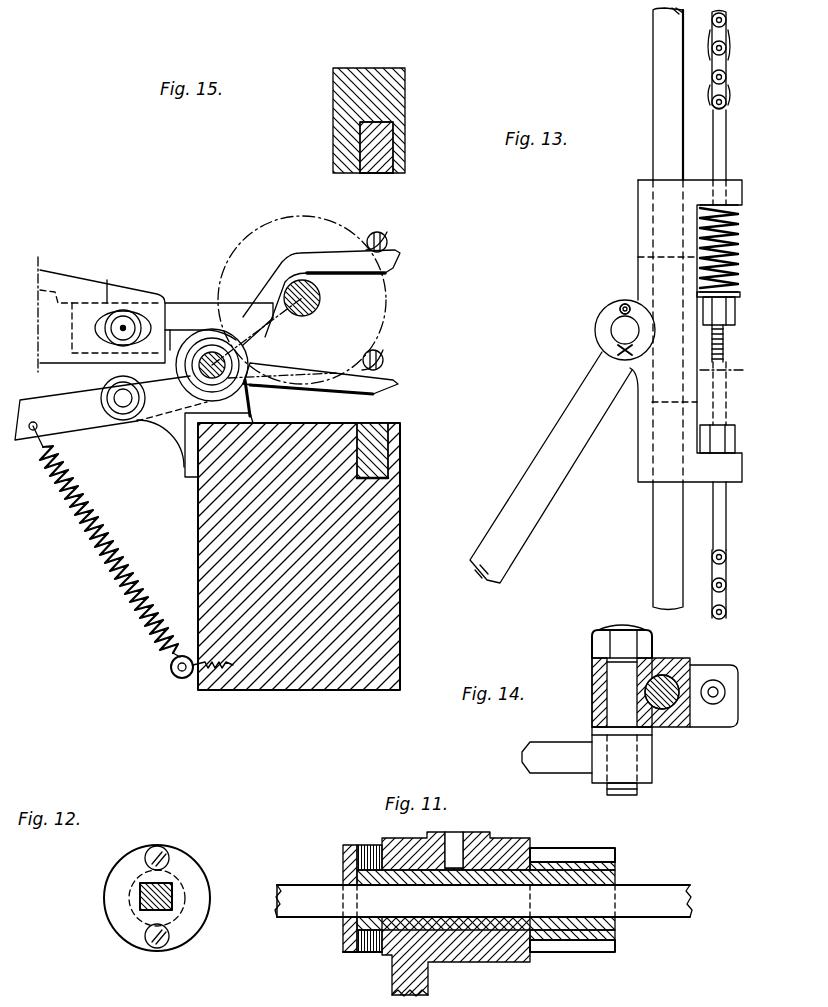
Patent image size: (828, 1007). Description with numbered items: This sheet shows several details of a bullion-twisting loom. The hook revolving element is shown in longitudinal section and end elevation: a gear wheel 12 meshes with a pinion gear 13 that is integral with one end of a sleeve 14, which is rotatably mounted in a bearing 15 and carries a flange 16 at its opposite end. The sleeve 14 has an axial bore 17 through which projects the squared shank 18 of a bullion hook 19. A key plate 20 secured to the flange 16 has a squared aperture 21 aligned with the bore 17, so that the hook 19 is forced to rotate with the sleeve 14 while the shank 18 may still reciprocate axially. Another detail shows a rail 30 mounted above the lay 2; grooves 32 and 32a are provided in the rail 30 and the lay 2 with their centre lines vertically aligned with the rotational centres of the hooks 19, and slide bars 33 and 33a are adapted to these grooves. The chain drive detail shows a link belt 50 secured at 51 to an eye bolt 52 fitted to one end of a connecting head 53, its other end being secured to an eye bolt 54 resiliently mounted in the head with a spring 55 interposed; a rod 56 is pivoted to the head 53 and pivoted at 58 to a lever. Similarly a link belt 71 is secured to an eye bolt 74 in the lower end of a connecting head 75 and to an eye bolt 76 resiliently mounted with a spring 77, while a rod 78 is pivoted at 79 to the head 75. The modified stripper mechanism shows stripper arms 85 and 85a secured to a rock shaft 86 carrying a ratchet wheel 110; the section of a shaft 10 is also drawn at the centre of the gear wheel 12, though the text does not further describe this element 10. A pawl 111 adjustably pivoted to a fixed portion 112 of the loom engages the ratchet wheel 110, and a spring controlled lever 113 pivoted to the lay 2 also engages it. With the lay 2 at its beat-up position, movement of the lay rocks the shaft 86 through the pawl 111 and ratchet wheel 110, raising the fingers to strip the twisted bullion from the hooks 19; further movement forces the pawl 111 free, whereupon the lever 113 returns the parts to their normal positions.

In FIG. 15, the lay 2 is at (370, 538).
In FIG. 15, the drive shaft 10 is at (320, 302).
In FIG. 15, the gear wheel 12 is at (385, 293).
In FIG. 15, the pinion gear 13 is at (388, 242).
In FIG. 11, the pinion gear 13 is at (607, 857).
In FIG. 13, the sleeve 14 is at (625, 330).
In FIG. 12, the sleeve 14 is at (178, 877).
In FIG. 11, the sleeve 14 is at (468, 920).
In FIG. 12, the bearing 15 is at (188, 945).
In FIG. 11, the bearing 15 is at (487, 852).
In FIG. 11, the flange 16 is at (372, 845).
In FIG. 12, the axial bore 17 is at (137, 890).
In FIG. 11, the axial bore 17 is at (552, 872).
In FIG. 12, the squared shank 18 is at (140, 898).
In FIG. 11, the squared shank 18 is at (297, 900).
In FIG. 15, the bullion hook 19 is at (385, 238).
In FIG. 11, the bullion hook 19 is at (648, 902).
In FIG. 12, the key plate 20 is at (130, 922).
In FIG. 11, the key plate 20 is at (345, 955).
In FIG. 12, the squared aperture 21 is at (172, 896).
In FIG. 11, the squared aperture 21 is at (343, 882).
In FIG. 15, the rail 30 is at (393, 98).
In FIG. 15, the groove 32 is at (393, 140).
In FIG. 15, the slide bar 33 is at (378, 173).
In FIG. 15, the groove 32a is at (377, 482).
In FIG. 15, the slide bar 33a is at (377, 445).
In FIG. 13, the link belt 50 is at (748, 598).
In FIG. 13, the securing point 51 is at (722, 550).
In FIG. 13, the eye bolt 52 is at (724, 425).
In FIG. 14, the eye bolt 52 is at (740, 692).
In FIG. 13, the connecting head 53 is at (638, 248).
In FIG. 14, the connecting head 53 is at (663, 660).
In FIG. 13, the eye bolt 54 is at (726, 158).
In FIG. 13, the spring 55 is at (752, 265).
In FIG. 13, the rod 56 is at (551, 432).
In FIG. 14, the rod 56 is at (552, 743).
In FIG. 13, the pivot 58 is at (620, 305).
In FIG. 14, the pivot 58 is at (638, 783).
In FIG. 13, the link belt 71 is at (737, 315).
In FIG. 13, the eye bolt 74 is at (733, 426).
In FIG. 13, the connecting head 75 is at (669, 331).
In FIG. 14, the connecting head 75 is at (649, 704).
In FIG. 13, the eye bolt 76 is at (735, 236).
In FIG. 13, the spring 77 is at (731, 251).
In FIG. 13, the rod 78 is at (551, 467).
In FIG. 14, the rod 78 is at (557, 744).
In FIG. 13, the pivot 79 is at (609, 292).
In FIG. 14, the pivot 79 is at (645, 803).
In FIG. 15, the stripper arm 85 is at (327, 262).
In FIG. 15, the stripper arm 85a is at (390, 392).
In FIG. 15, the rock shaft 86 is at (238, 383).
In FIG. 15, the ratchet wheel 110 is at (253, 367).
In FIG. 15, the pawl 111 is at (187, 308).
In FIG. 15, the fixed portion 112 is at (78, 285).
In FIG. 15, the spring controlled lever 113 is at (97, 413).